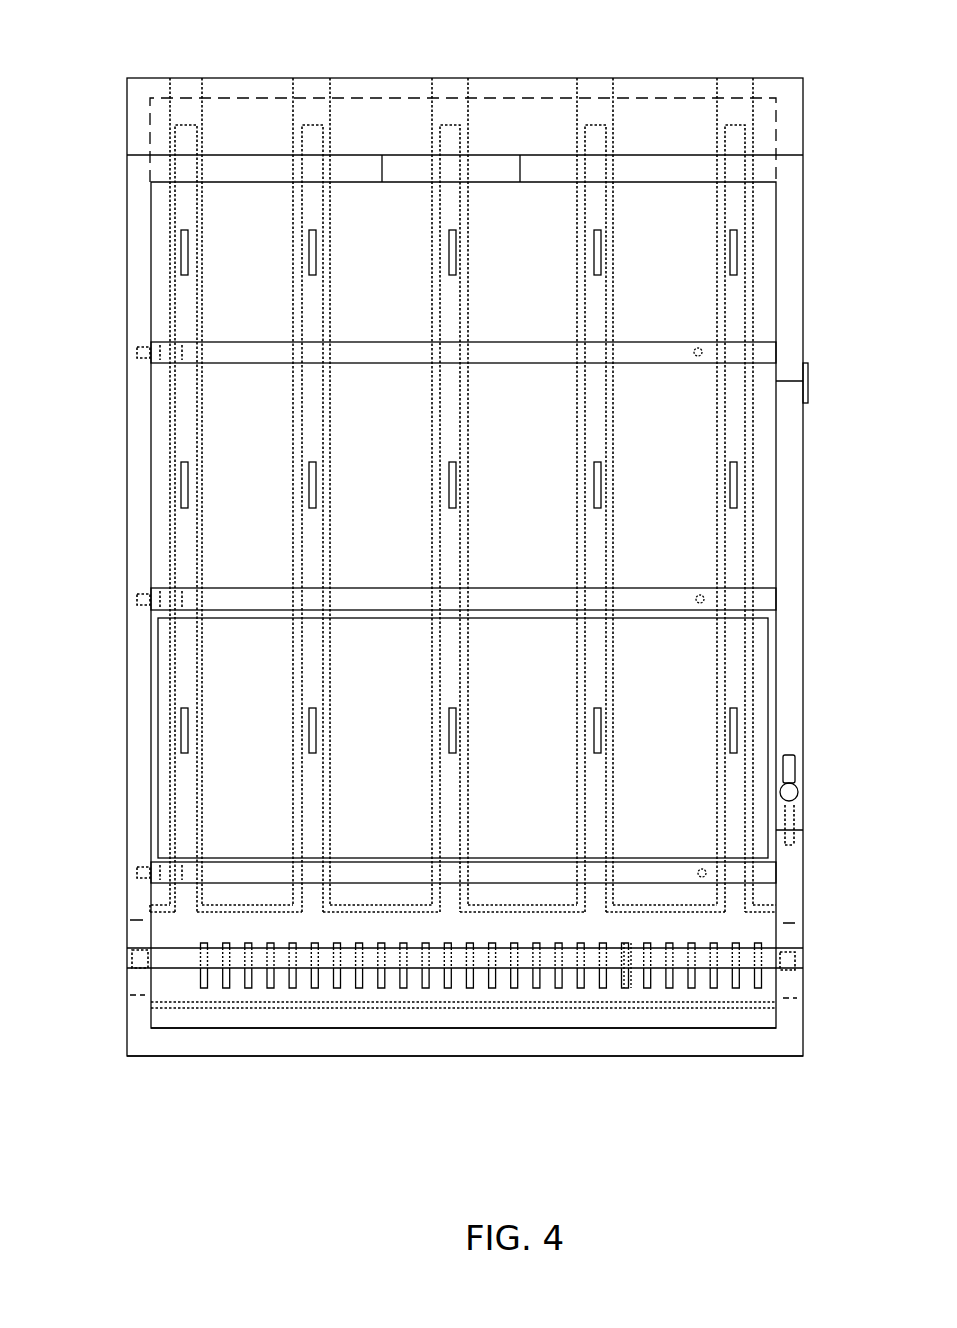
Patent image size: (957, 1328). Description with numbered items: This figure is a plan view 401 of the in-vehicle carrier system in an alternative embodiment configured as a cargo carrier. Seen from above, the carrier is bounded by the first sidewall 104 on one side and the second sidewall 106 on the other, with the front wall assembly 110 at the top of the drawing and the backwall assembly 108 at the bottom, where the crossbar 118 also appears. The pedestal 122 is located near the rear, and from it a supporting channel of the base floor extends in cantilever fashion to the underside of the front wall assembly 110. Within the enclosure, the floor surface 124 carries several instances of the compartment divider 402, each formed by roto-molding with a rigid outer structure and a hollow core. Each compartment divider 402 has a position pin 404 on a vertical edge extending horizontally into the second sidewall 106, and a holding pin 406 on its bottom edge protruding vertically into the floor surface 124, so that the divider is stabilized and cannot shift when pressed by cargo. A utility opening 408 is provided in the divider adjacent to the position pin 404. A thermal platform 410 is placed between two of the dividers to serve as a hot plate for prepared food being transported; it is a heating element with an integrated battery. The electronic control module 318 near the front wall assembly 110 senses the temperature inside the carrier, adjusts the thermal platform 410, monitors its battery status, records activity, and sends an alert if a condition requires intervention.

The plan view 401 is at (228, 48).
The first sidewall 104 is at (790, 317).
The second sidewall 106 is at (138, 530).
The front wall assembly 110 is at (512, 125).
The electronic control module 318 is at (402, 170).
The floor surface 124 is at (262, 222).
The utility opening 408 is at (178, 345).
The compartment divider 402 is at (663, 598).
The position pin 404 is at (147, 598).
The holding pin 406 is at (702, 595).
The thermal platform 410 is at (163, 648).
The pedestal 122 is at (183, 928).
The crossbar 118 is at (702, 962).
The backwall assembly 108 is at (583, 1043).